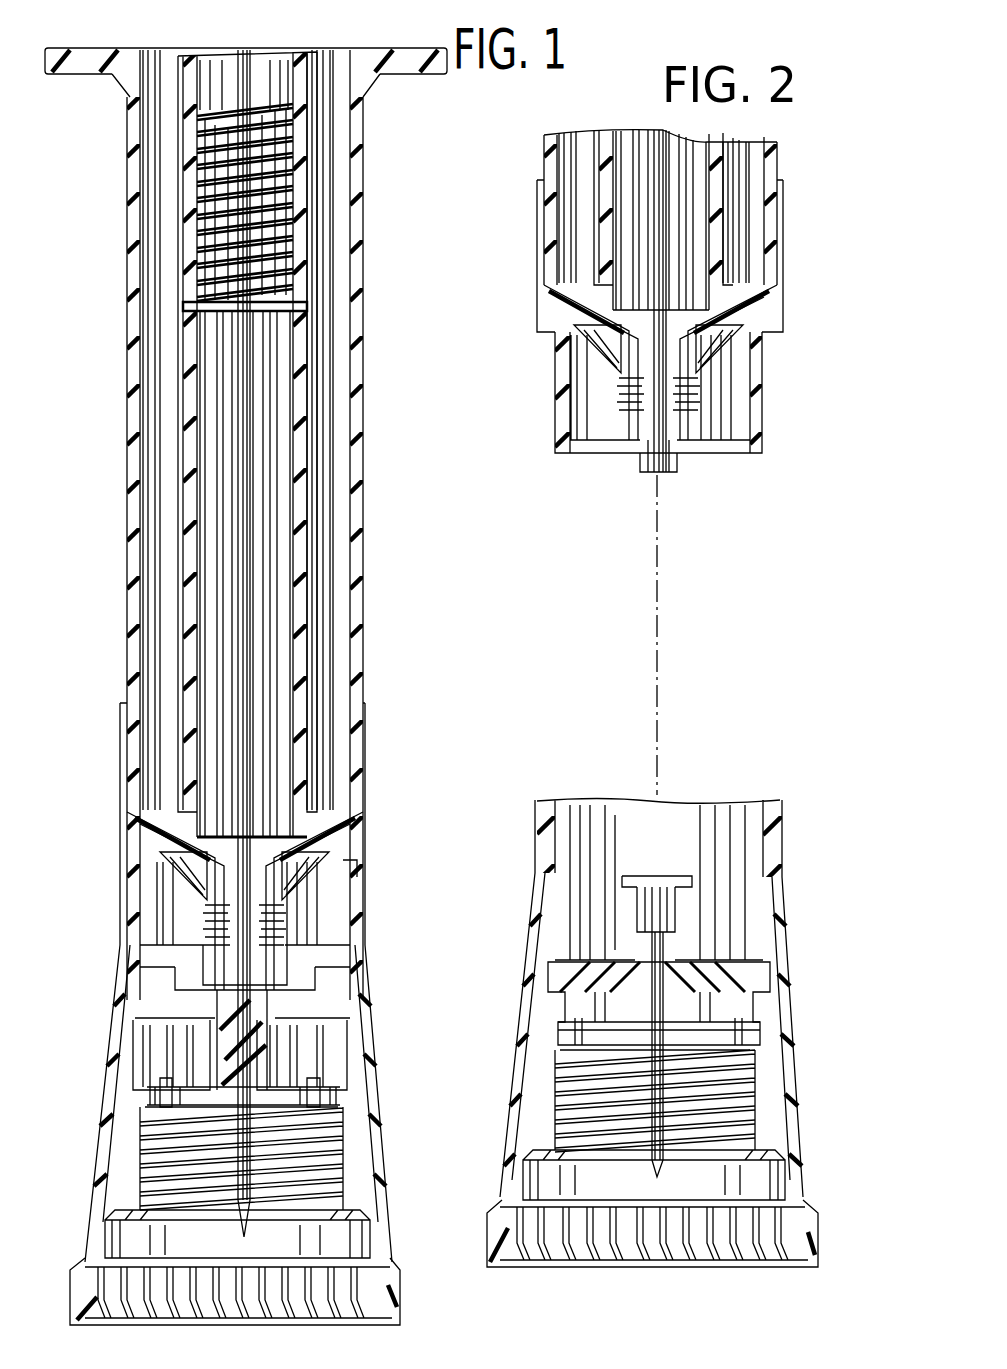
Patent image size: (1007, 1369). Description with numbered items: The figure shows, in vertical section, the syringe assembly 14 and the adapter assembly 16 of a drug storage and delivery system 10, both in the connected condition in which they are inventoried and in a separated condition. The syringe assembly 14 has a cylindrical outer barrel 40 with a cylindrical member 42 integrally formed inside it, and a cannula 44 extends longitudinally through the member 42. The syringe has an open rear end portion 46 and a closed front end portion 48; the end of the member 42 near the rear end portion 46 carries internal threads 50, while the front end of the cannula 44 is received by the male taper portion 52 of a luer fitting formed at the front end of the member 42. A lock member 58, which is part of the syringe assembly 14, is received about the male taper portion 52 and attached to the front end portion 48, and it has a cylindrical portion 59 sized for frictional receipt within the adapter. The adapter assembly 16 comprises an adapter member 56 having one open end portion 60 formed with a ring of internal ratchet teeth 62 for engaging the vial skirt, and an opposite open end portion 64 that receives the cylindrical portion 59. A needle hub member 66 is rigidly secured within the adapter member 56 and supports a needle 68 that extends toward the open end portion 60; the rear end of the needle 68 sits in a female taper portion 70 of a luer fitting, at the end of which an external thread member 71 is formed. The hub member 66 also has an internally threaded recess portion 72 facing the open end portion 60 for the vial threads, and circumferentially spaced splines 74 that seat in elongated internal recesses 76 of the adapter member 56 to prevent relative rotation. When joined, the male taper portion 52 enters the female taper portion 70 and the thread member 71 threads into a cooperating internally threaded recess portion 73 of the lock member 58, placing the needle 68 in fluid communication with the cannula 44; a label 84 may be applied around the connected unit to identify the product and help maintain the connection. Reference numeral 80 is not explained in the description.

In FIG. 1, the drug storage and delivery system 10 is at (370, 443).
In FIG. 1, the syringe assembly 14 is at (118, 377).
In FIG. 2, the syringe assembly 14 is at (538, 161).
In FIG. 1, the adapter assembly 16 is at (380, 970).
In FIG. 2, the adapter assembly 16 is at (797, 962).
In FIG. 1, the barrel 40 is at (355, 262).
In FIG. 2, the barrel 40 is at (770, 150).
In FIG. 1, the cylindrical member 42 is at (182, 527).
In FIG. 2, the cylindrical member 42 is at (717, 227).
In FIG. 1, the cannula 44 is at (243, 548).
In FIG. 2, the cannula 44 is at (658, 166).
In FIG. 1, the open rear end portion 46 is at (158, 165).
In FIG. 1, the closed front end portion 48 is at (263, 770).
In FIG. 2, the closed front end portion 48 is at (686, 299).
In FIG. 1, the internal threads 50 is at (290, 233).
In FIG. 1, the male taper portion 52 is at (230, 948).
In FIG. 2, the male taper portion 52 is at (634, 438).
In FIG. 1, the adapter member 56 is at (377, 1118).
In FIG. 1, the lock member 58 is at (137, 843).
In FIG. 2, the lock member 58 is at (564, 318).
In FIG. 1, the cylindrical portion 59 is at (337, 897).
In FIG. 2, the cylindrical portion 59 is at (757, 387).
In FIG. 1, the open end portion 60 is at (347, 1318).
In FIG. 2, the open end portion 60 is at (775, 1223).
In FIG. 1, the ratchet teeth 62 is at (362, 1280).
In FIG. 2, the ratchet teeth 62 is at (753, 1263).
In FIG. 2, the open end portion 64 is at (723, 813).
In FIG. 1, the needle hub member 66 is at (163, 1027).
In FIG. 2, the needle hub member 66 is at (637, 967).
In FIG. 1, the needle 68 is at (150, 1143).
In FIG. 2, the needle 68 is at (763, 1064).
In FIG. 1, the female taper portion 70 is at (207, 927).
In FIG. 2, the female taper portion 70 is at (665, 907).
In FIG. 1, the external thread member 71 is at (290, 933).
In FIG. 2, the external thread member 71 is at (690, 880).
In FIG. 1, the internally threaded recess portion 72 is at (170, 1160).
In FIG. 2, the internally threaded recess portion 72 is at (560, 1094).
In FIG. 1, the internally threaded recess portion 73 is at (210, 962).
In FIG. 2, the internally threaded recess portion 73 is at (689, 412).
In FIG. 1, the splines 74 is at (347, 1172).
In FIG. 2, the splines 74 is at (760, 1104).
In FIG. 1, the elongated internal recesses 76 is at (352, 1087).
In FIG. 2, the elongated internal recesses 76 is at (542, 1027).
In FIG. 1, the clip 80 is at (140, 1102).
In FIG. 2, the clip 80 is at (577, 1043).
In FIG. 1, the label 84 is at (365, 797).
In FIG. 2, the label 84 is at (780, 255).